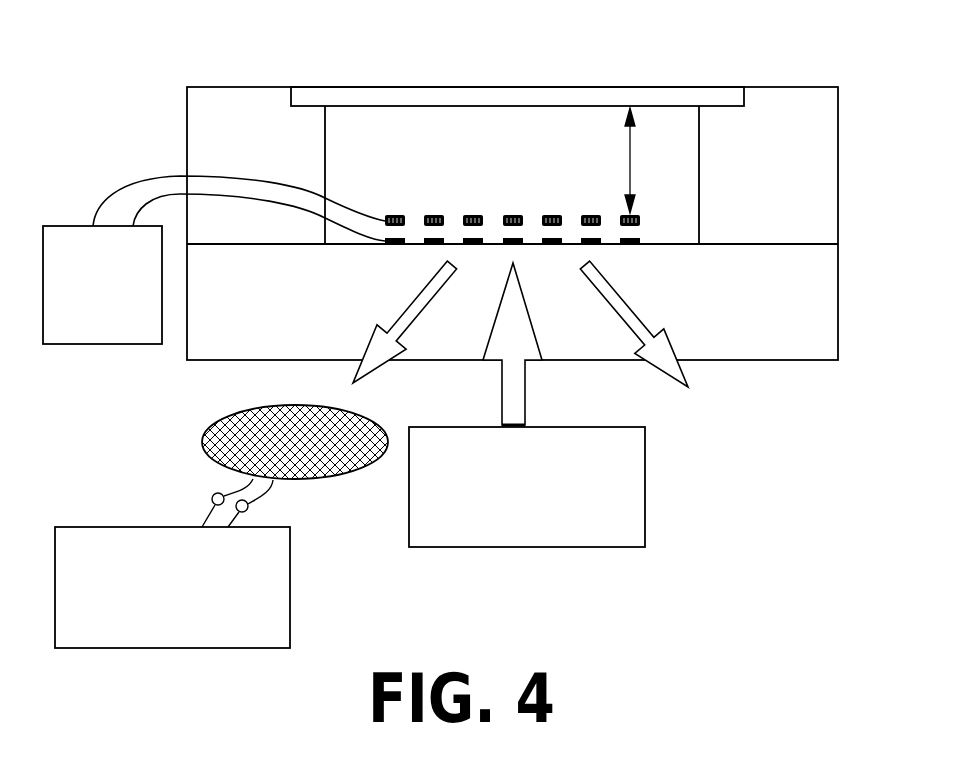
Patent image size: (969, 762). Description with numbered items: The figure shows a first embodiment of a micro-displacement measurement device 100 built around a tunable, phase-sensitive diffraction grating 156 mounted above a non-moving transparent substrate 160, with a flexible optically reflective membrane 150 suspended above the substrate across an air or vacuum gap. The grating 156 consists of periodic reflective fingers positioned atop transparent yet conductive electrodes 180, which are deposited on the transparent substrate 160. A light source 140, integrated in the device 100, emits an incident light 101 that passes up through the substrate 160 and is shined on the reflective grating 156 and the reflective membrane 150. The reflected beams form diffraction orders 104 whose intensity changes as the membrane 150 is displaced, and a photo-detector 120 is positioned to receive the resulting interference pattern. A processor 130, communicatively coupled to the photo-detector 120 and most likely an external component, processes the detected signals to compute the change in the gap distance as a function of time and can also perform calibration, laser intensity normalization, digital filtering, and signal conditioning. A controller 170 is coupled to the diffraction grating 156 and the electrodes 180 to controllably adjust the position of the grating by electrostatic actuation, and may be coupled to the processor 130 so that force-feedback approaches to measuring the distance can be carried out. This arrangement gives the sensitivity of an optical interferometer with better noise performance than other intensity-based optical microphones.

The micro-displacement measurement device 100 is at (317, 63).
The light 101 is at (525, 380).
The diffraction orders 104 is at (425, 313).
The photo-detector 120 is at (203, 437).
The processor 130 is at (288, 638).
The light source 140 is at (635, 535).
The membrane 150 is at (592, 80).
The diffraction grating 156 is at (662, 215).
The transparent substrate 160 is at (823, 348).
The controller 170 is at (160, 335).
The electrodes 180 is at (642, 267).